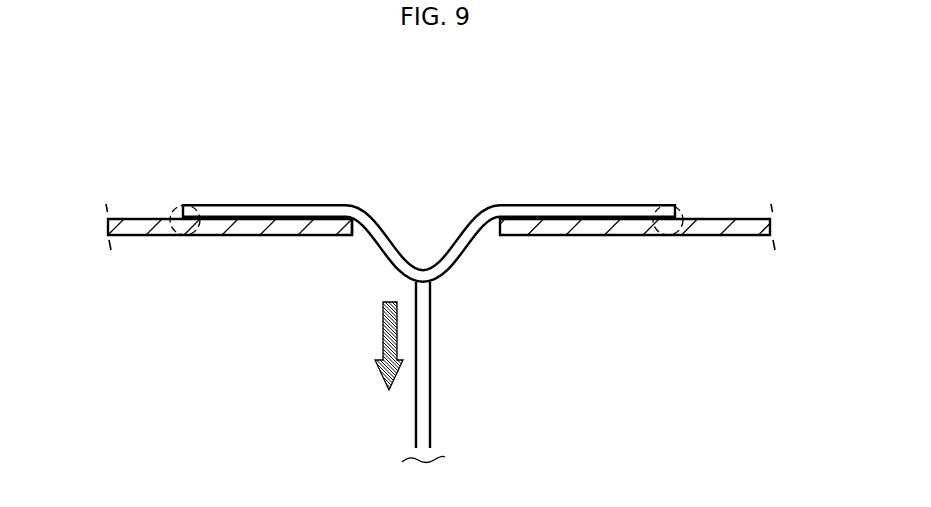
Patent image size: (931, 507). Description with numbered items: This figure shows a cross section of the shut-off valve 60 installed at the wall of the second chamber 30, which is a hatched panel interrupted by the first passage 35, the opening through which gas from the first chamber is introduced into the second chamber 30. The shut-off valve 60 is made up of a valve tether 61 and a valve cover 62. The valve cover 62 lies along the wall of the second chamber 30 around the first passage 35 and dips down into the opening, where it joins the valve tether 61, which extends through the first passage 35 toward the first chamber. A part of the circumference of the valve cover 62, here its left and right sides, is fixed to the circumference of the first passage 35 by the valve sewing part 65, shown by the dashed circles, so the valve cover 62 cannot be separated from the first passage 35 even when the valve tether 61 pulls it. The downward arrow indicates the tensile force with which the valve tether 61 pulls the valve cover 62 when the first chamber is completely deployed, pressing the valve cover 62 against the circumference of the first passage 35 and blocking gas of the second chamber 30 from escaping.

The second chamber 30 is at (710, 228).
The first passage 35 is at (357, 240).
The shut-off valve 60 is at (429, 333).
The valve tether 61 is at (478, 372).
The valve cover 62 is at (570, 210).
The valve sewing part 65 is at (170, 211).